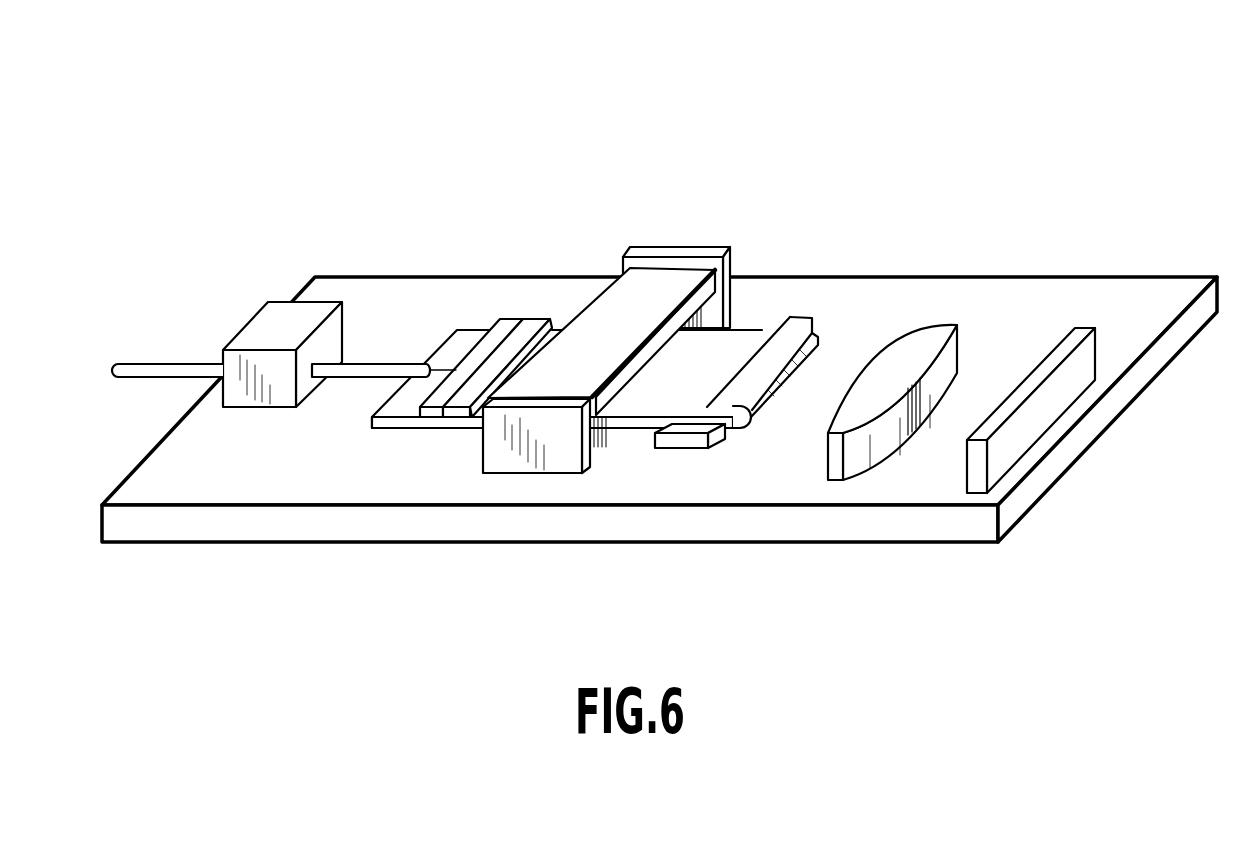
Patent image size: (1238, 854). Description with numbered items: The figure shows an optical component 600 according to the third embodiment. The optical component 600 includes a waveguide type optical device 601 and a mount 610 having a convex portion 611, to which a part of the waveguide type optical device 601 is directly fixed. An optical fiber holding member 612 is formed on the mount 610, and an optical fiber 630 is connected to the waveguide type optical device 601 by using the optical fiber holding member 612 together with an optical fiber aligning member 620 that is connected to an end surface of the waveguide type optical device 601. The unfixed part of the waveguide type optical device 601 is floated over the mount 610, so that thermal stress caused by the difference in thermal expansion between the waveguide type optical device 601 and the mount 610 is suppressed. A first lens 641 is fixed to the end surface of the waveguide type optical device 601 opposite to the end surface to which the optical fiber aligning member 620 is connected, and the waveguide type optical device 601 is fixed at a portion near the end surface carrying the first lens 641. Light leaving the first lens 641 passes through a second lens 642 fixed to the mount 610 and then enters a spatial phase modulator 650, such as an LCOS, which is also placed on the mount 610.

The optical component 600 is at (878, 152).
The waveguide type optical device 601 is at (735, 338).
The mount 610 is at (800, 525).
The convex portion 611 is at (682, 445).
The optical fiber holding member 612 is at (283, 305).
The optical fiber aligning member 620 is at (433, 425).
The optical fiber 630 is at (160, 370).
The first lens 641 is at (772, 370).
The second lens 642 is at (917, 352).
The spatial phase modulator 650 is at (1060, 348).